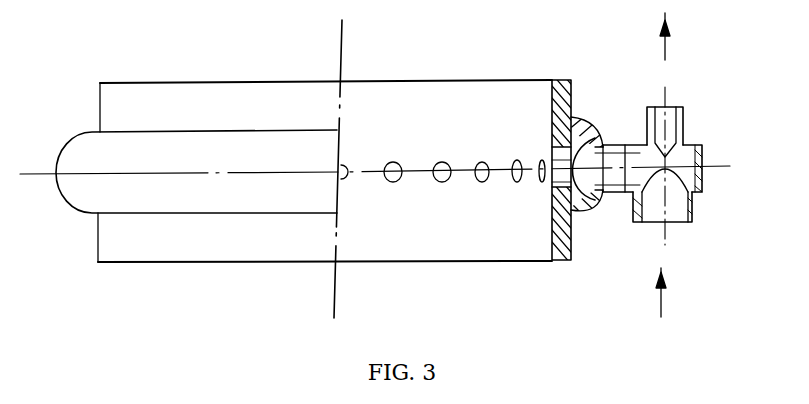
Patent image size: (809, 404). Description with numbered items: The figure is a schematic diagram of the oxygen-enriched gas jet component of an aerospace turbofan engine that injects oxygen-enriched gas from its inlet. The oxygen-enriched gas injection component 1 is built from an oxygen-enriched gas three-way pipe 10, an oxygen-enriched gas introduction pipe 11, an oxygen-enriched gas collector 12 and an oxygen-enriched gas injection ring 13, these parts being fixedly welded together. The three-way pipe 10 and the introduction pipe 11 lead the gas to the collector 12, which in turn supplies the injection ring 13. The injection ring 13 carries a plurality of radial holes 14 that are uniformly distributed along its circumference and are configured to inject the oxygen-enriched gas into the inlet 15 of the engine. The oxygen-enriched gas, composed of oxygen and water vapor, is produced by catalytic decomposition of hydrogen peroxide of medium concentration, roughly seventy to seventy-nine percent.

The oxygen-enriched gas injection component 1 is at (448, 78).
The oxygen-enriched gas three-way pipe 10 is at (695, 213).
The oxygen-enriched gas introduction pipe 11 is at (603, 195).
The oxygen-enriched gas collector 12 is at (585, 117).
The oxygen-enriched gas injection ring 13 is at (552, 117).
The radial holes 14 is at (548, 195).
The inlet 15 is at (418, 222).